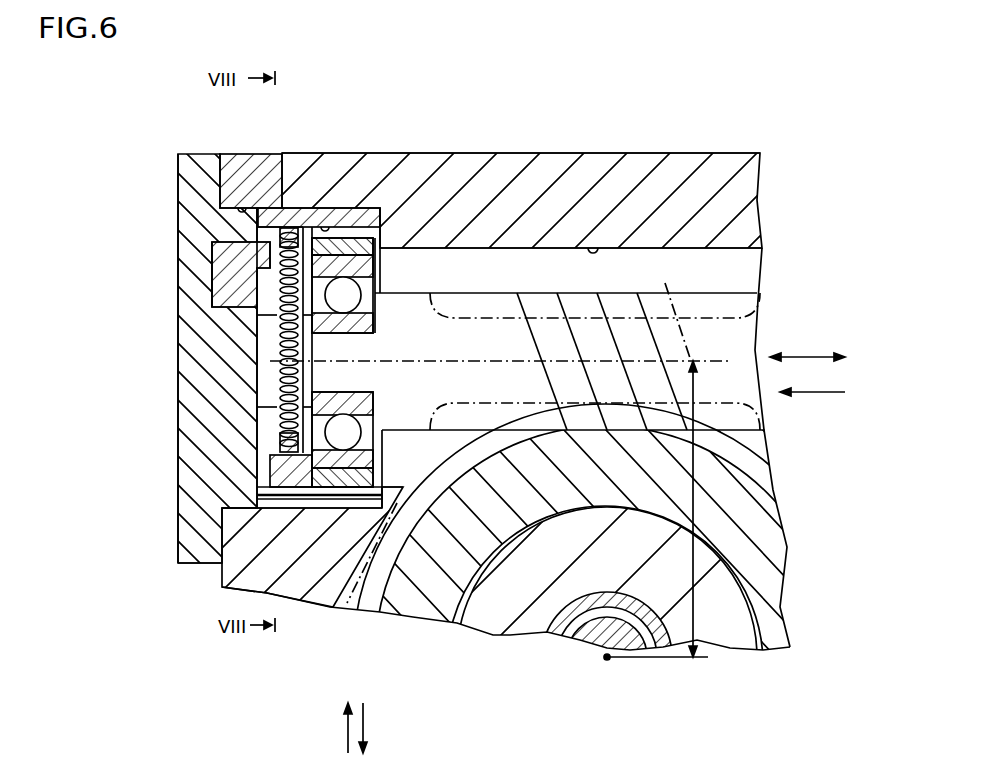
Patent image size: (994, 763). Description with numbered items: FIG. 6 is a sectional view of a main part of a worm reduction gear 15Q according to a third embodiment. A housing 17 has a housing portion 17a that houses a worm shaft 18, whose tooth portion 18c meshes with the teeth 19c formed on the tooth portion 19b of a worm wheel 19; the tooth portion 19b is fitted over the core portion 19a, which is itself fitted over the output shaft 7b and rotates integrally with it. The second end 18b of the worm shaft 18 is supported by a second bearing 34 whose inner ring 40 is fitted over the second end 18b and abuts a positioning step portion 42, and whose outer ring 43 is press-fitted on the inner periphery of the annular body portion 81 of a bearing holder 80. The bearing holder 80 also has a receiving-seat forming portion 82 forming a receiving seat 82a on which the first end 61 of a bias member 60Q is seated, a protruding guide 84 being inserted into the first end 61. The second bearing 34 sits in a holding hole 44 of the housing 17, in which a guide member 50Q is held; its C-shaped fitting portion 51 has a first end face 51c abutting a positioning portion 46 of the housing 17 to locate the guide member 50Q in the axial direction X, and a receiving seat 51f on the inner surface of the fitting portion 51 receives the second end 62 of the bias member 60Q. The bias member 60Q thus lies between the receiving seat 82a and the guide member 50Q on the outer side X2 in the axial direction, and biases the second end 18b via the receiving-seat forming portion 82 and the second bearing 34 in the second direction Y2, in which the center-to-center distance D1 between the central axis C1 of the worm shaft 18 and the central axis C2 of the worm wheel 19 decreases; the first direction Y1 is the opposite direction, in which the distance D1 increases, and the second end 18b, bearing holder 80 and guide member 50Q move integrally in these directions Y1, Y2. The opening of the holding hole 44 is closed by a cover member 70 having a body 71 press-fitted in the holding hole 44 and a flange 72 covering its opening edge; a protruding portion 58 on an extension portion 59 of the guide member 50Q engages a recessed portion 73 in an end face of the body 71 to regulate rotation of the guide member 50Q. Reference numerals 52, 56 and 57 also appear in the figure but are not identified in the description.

The output shaft 7b is at (560, 632).
The worm reduction gear 15Q is at (691, 126).
The housing 17 is at (720, 165).
The housing portion 17a is at (593, 248).
The worm shaft 18 is at (540, 288).
The second end 18b is at (285, 372).
The tooth portion 18c is at (620, 293).
The worm wheel 19 is at (472, 652).
The core portion 19a is at (494, 620).
The tooth portion 19b is at (423, 597).
The teeth 19c is at (366, 609).
The second bearing 34 is at (372, 428).
The inner ring 40 is at (380, 296).
The positioning step portion 42 is at (375, 330).
The outer ring 43 is at (372, 452).
The holding hole 44 is at (238, 207).
The positioning portion 46 is at (383, 215).
The guide member 50Q is at (322, 198).
The fitting portion 51 is at (252, 428).
The first end face 51c is at (400, 222).
The receiving seat 51f is at (280, 240).
The base plate 52 is at (317, 500).
The spring chamber 56 is at (268, 343).
The top plate 57 is at (333, 217).
The protruding portion 58 is at (222, 272).
The extension portion 59 is at (257, 240).
The bias member 60Q is at (272, 390).
The first end 61 is at (268, 452).
The second end 62 is at (305, 228).
The cover member 70 is at (176, 340).
The body 71 is at (235, 507).
The flange 72 is at (188, 555).
The recessed portion 73 is at (212, 287).
The bearing holder 80 is at (362, 232).
The body portion 81 is at (337, 480).
The receiving-seat forming portion 82 is at (267, 500).
The receiving seat 82a is at (268, 478).
The guide 84 is at (275, 443).
The central axis C1 is at (670, 306).
The central axis C2 is at (607, 661).
The center-to-center distance D1 is at (717, 608).
The axial direction X is at (807, 335).
The outer side X2 is at (812, 416).
The first direction Y1 is at (343, 728).
The second direction Y2 is at (368, 726).